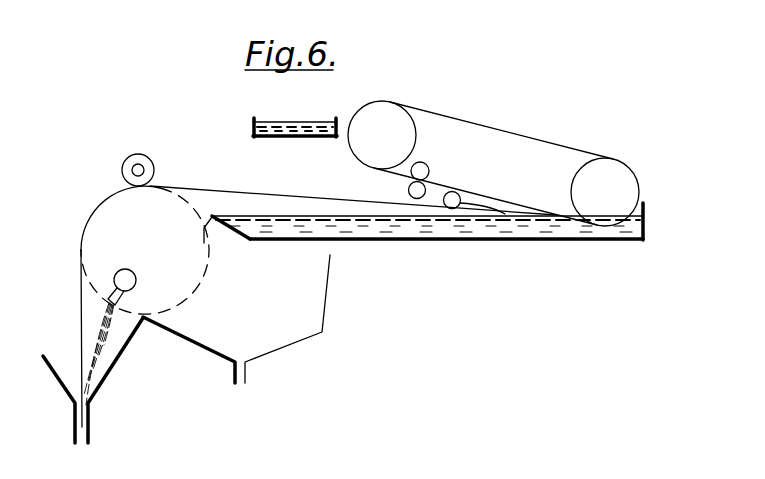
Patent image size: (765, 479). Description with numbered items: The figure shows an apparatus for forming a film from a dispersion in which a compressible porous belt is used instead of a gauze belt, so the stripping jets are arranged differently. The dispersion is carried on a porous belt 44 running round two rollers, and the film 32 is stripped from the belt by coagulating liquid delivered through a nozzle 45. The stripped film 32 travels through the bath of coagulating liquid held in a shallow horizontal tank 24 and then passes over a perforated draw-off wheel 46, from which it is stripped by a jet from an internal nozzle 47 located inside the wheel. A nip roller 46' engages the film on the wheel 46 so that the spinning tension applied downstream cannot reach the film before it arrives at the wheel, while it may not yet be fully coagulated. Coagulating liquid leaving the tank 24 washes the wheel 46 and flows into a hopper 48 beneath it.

The tank 24 is at (408, 239).
The film 32 is at (263, 181).
The porous belt 44 is at (528, 117).
The nozzle 45 is at (452, 195).
The perforated draw-off wheel 46 is at (162, 306).
The nip roller 46' is at (97, 178).
The internal nozzle 47 is at (134, 285).
The hopper 48 is at (272, 352).